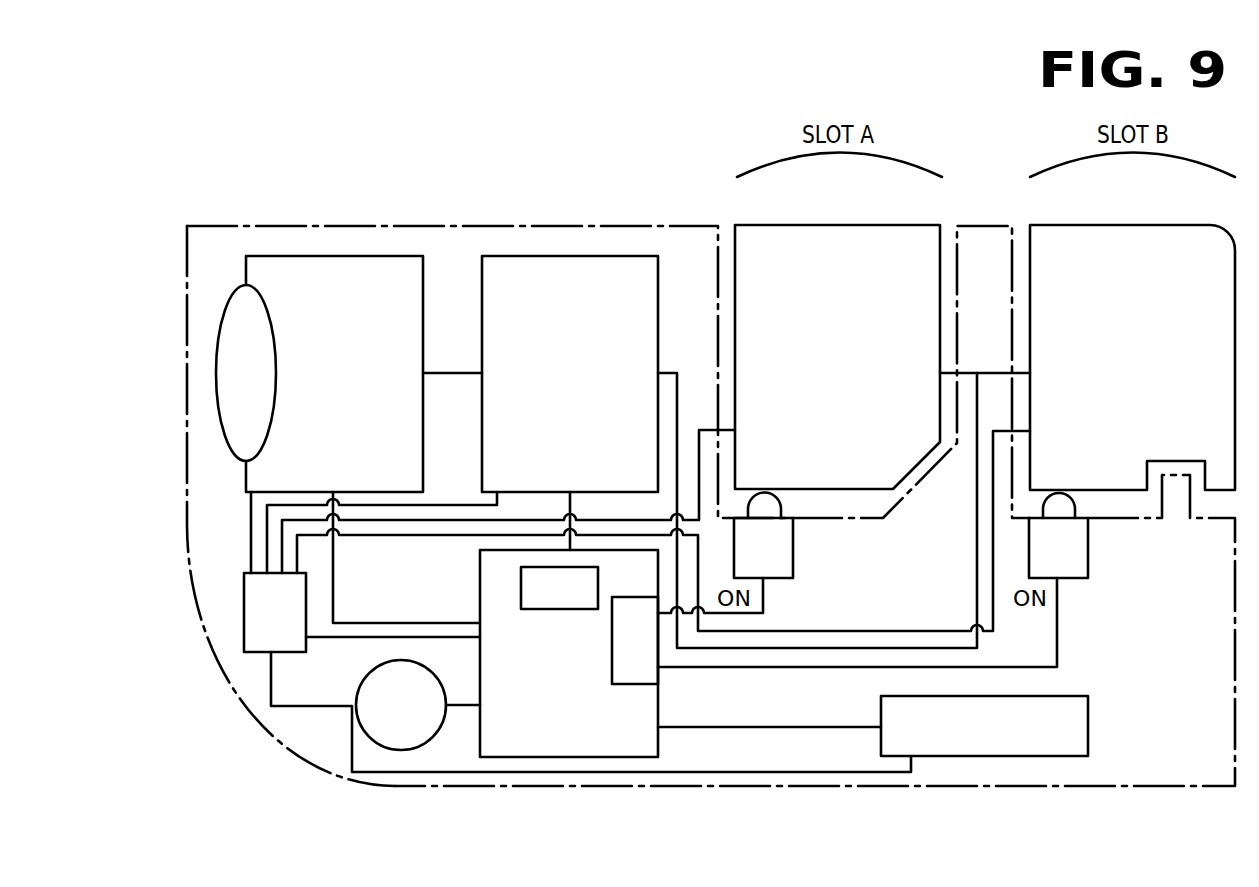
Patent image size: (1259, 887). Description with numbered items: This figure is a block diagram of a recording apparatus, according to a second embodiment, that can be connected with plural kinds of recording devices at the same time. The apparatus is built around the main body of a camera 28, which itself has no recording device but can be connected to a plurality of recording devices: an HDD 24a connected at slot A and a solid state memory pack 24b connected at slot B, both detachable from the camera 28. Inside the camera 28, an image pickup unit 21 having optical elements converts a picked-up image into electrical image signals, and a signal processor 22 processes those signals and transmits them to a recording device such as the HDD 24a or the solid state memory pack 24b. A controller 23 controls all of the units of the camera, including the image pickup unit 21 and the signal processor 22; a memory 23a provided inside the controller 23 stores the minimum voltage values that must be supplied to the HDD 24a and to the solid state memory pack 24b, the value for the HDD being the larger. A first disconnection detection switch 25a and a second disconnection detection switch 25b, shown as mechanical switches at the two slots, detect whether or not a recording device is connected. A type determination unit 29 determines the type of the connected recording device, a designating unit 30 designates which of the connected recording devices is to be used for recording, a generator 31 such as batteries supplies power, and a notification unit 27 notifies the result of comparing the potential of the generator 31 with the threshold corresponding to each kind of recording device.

The image pickup unit 21 is at (320, 263).
The signal processor 22 is at (513, 263).
The controller 23 is at (605, 750).
The memory 23a is at (522, 585).
The HDD 24a is at (803, 232).
The solid state memory pack 24b is at (1095, 230).
The first disconnection detection switch 25a is at (793, 556).
The second disconnection detection switch 25b is at (1088, 558).
The notification unit 27 is at (1088, 724).
The main body of a camera 28 is at (389, 786).
The type determination unit 29 is at (657, 677).
The designating unit 30 is at (371, 690).
The generator 31 is at (248, 613).